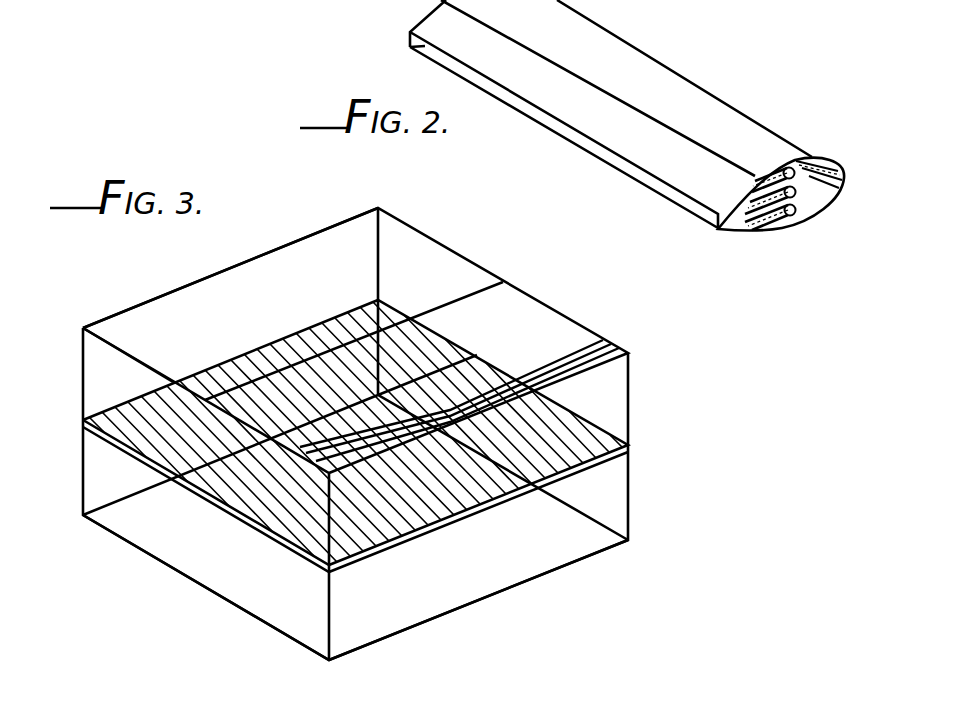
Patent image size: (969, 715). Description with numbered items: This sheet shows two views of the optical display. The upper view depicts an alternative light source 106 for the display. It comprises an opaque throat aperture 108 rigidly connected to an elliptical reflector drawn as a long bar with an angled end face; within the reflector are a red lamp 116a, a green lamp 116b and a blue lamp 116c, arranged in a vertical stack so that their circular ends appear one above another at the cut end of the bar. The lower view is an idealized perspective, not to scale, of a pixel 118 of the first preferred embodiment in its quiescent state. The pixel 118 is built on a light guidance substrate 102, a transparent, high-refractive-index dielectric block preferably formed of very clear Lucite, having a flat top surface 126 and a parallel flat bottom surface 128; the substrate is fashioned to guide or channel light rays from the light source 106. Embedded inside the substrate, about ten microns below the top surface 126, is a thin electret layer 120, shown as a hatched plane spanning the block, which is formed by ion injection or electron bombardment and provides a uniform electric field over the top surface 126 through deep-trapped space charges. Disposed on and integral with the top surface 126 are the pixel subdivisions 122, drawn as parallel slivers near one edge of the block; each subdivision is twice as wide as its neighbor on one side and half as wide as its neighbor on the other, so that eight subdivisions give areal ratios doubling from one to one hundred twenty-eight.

In FIG. 3, the light guidance substrate 102 is at (84, 466).
In FIG. 2, the light source 106 is at (836, 135).
In FIG. 2, the opaque throat aperture 108 is at (430, 19).
In FIG. 2, the red lamp 116a is at (784, 169).
In FIG. 2, the green lamp 116b is at (788, 199).
In FIG. 2, the blue lamp 116c is at (786, 215).
In FIG. 3, the pixel 118 is at (177, 267).
In FIG. 3, the electret layer 120 is at (402, 542).
In FIG. 3, the pixel subdivisions 122 is at (614, 342).
In FIG. 3, the top surface 126 is at (205, 341).
In FIG. 3, the bottom surface 128 is at (180, 552).